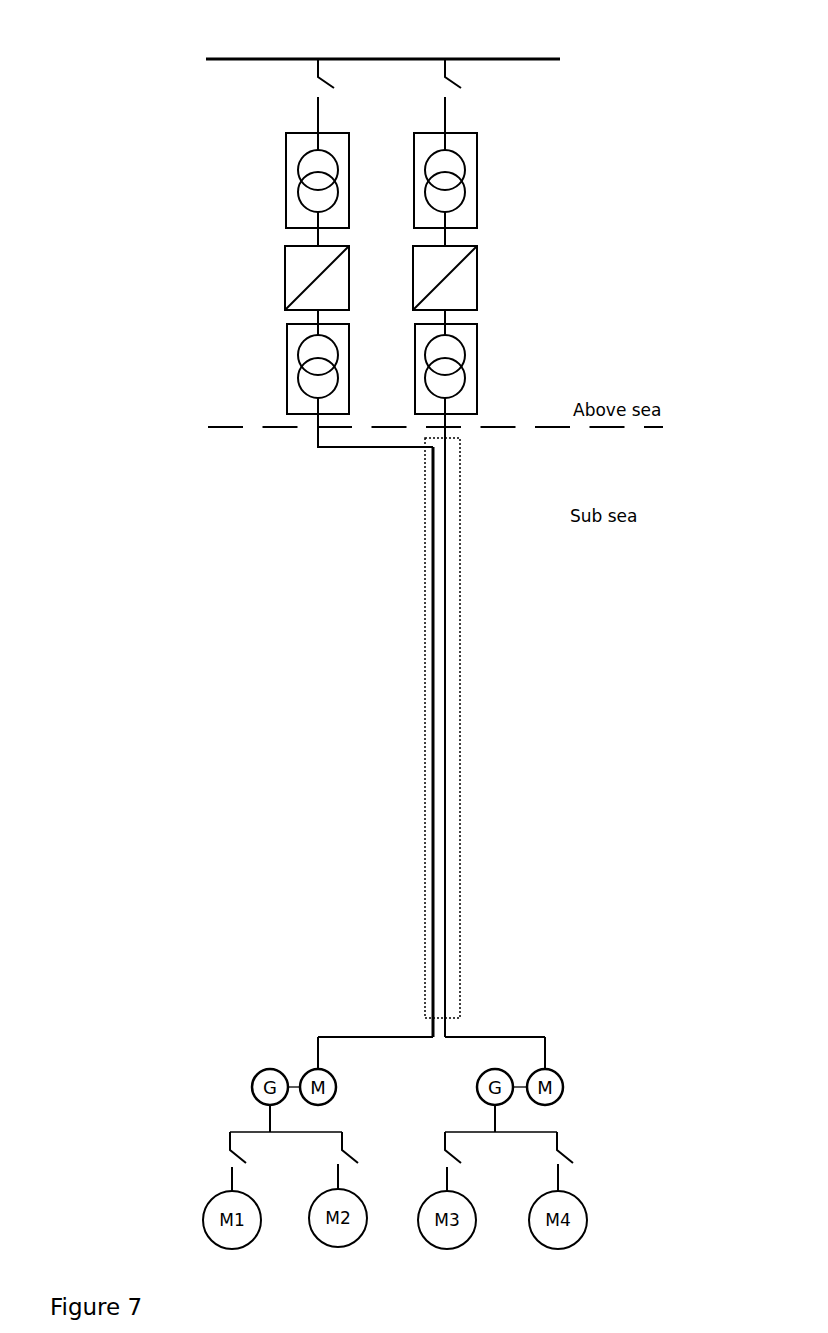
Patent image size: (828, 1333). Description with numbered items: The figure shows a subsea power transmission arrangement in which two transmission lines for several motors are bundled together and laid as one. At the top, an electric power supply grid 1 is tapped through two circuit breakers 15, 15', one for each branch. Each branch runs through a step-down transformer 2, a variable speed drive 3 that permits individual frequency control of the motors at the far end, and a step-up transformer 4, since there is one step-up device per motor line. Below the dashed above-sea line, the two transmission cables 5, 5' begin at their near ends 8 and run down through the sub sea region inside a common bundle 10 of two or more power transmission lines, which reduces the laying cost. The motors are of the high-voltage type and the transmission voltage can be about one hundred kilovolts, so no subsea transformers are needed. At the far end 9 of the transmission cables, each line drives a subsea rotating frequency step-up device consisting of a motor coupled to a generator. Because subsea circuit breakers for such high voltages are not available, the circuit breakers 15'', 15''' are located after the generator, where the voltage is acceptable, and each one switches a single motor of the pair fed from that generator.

The electric power supply grid 1 is at (332, 46).
The circuit breaker 15 is at (476, 73).
The circuit breaker 15' is at (290, 77).
The step-down transformer 2 is at (412, 190).
The variable speed drive 3 is at (398, 283).
The step-up transformer 4 is at (405, 378).
The near end of transmission cable 8 is at (425, 488).
The transmission cable 5 is at (418, 725).
The transmission cable 5' is at (396, 742).
The common bundle of two or more power transmission lines 10 is at (465, 677).
The far end of transmission cable 9 is at (418, 1031).
The circuit breaker 15'' is at (363, 1148).
The circuit breaker 15''' is at (480, 1147).